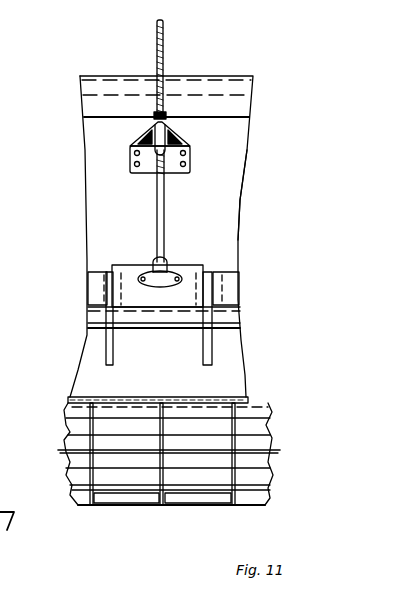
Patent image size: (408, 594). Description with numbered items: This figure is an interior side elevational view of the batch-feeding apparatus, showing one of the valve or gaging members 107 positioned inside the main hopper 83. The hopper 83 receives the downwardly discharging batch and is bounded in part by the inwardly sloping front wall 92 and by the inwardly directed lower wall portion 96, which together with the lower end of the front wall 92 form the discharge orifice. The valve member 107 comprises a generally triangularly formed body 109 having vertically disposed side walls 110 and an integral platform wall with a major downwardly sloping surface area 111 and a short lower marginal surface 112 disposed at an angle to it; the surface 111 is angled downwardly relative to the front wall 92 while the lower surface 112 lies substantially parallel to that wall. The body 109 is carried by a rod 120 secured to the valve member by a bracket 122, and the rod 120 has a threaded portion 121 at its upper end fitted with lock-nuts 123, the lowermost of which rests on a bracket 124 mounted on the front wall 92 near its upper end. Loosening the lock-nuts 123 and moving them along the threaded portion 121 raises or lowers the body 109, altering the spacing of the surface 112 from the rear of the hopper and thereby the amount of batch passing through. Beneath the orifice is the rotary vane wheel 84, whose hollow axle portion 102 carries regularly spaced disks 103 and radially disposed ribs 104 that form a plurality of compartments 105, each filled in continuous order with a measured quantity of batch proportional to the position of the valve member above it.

The main hopper 83 is at (228, 160).
The rotary vane wheel 84 is at (62, 421).
The front wall 92 is at (223, 198).
The lower wall portion 96 is at (217, 388).
The hollow axle portion 102 is at (252, 458).
The disks 103 is at (272, 440).
The ribs 104 is at (258, 423).
The compartments 105 is at (195, 465).
The valve member 107 is at (123, 260).
The body 109 is at (193, 262).
The side walls 110 is at (118, 343).
The downwardly sloping surface area 111 is at (185, 292).
The lower marginal surface 112 is at (149, 316).
The rod 120 is at (164, 207).
The threaded portion 121 is at (163, 52).
The bracket 122 is at (157, 262).
The lock-nuts 123 is at (166, 113).
The bracket 124 is at (191, 141).